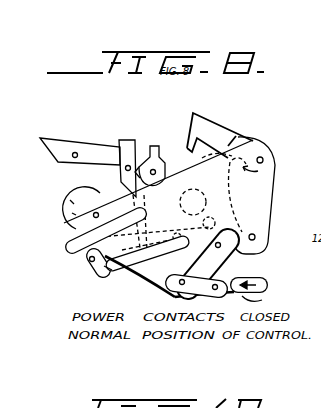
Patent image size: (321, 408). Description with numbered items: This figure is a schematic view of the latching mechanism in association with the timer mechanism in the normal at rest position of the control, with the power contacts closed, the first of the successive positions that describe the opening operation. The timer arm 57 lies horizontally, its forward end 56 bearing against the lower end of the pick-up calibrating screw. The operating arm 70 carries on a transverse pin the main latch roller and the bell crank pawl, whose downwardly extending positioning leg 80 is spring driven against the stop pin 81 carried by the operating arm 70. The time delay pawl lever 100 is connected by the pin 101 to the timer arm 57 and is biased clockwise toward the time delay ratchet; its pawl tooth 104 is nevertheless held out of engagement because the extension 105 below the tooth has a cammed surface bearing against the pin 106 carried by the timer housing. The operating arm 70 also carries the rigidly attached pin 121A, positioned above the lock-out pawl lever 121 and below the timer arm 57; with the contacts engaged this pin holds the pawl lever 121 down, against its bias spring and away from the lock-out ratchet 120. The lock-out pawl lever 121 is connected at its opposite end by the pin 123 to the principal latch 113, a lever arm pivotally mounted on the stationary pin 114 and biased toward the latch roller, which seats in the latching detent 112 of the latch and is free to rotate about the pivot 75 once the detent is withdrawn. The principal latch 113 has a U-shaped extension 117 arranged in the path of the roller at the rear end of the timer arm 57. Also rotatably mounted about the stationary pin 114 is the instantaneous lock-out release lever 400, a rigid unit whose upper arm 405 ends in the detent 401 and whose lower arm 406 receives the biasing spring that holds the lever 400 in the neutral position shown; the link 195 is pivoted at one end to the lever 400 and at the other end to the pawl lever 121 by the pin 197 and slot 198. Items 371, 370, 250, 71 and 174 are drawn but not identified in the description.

The forward end of the timer arm 56 is at (48, 138).
The timer arm 57 is at (85, 149).
The vertical link 371 is at (126, 140).
The pin 101 is at (147, 146).
The cam lug 370 is at (157, 152).
The U-shaped extension 117 is at (193, 113).
The bracket end 250 is at (235, 136).
The operating arm 70 is at (274, 183).
The pivot 75 is at (262, 158).
The stop pin 81 is at (251, 224).
The link rod 71 is at (188, 185).
The latching detent 112 is at (214, 153).
The principal latch 113 is at (239, 203).
The pawl tooth 104 is at (175, 204).
The extension 105 is at (151, 222).
The positioning leg 80 is at (203, 223).
The pin 121A is at (173, 237).
The time delay pawl lever 100 is at (124, 197).
The detent 401 is at (70, 200).
The lock-out ratchet 120 is at (72, 213).
The link bar 174 is at (80, 262).
The lock-out pawl lever 121 is at (88, 268).
The pin 197 is at (147, 258).
The slot 198 is at (184, 250).
The upper arm 405 is at (138, 279).
The stationary pin 114 is at (188, 300).
The pin 106 is at (113, 270).
The pin 123 is at (226, 258).
The link 195 is at (198, 296).
The instantaneous lock-out release lever 400 is at (264, 286).
The lower arm 406 is at (263, 300).